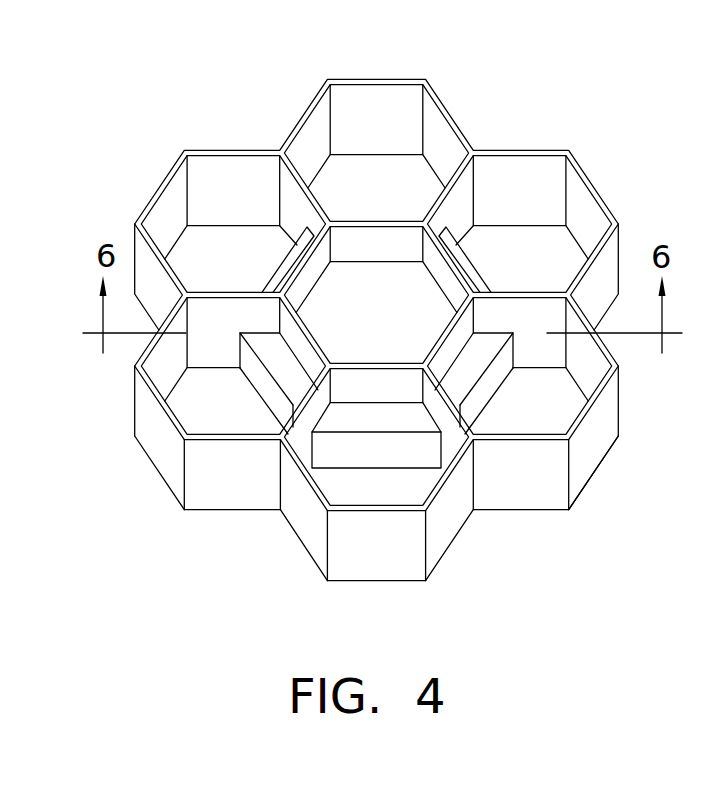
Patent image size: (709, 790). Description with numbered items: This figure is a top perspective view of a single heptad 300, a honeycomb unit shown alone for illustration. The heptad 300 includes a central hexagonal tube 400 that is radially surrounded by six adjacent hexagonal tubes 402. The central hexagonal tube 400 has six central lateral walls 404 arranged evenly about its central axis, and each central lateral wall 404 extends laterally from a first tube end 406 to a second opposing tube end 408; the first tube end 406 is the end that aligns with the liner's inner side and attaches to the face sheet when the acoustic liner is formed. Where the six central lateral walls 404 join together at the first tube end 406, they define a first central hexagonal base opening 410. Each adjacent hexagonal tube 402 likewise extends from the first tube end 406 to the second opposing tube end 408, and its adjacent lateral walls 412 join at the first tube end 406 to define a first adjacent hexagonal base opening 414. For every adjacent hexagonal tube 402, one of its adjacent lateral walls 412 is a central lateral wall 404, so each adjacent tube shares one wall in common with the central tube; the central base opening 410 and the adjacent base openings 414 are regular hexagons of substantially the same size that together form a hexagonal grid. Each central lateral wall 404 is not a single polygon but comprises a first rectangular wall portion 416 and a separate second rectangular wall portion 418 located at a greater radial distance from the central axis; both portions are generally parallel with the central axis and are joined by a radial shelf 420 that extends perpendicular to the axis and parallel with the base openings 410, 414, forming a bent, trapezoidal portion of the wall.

The heptad 300 is at (512, 48).
The central hexagonal tube 400 is at (403, 303).
The adjacent hexagonal tubes 402 is at (376, 135).
The central lateral walls 404 is at (303, 283).
The first tube end 406 is at (619, 365).
The second opposing tube end 408 is at (619, 437).
The first central hexagonal base opening 410 is at (433, 300).
The adjacent lateral walls 412 is at (384, 98).
The first adjacent hexagonal base opening 414 is at (216, 399).
The first rectangular wall portion 416 is at (352, 388).
The second rectangular wall portion 418 is at (417, 457).
The radial shelf 420 is at (340, 417).